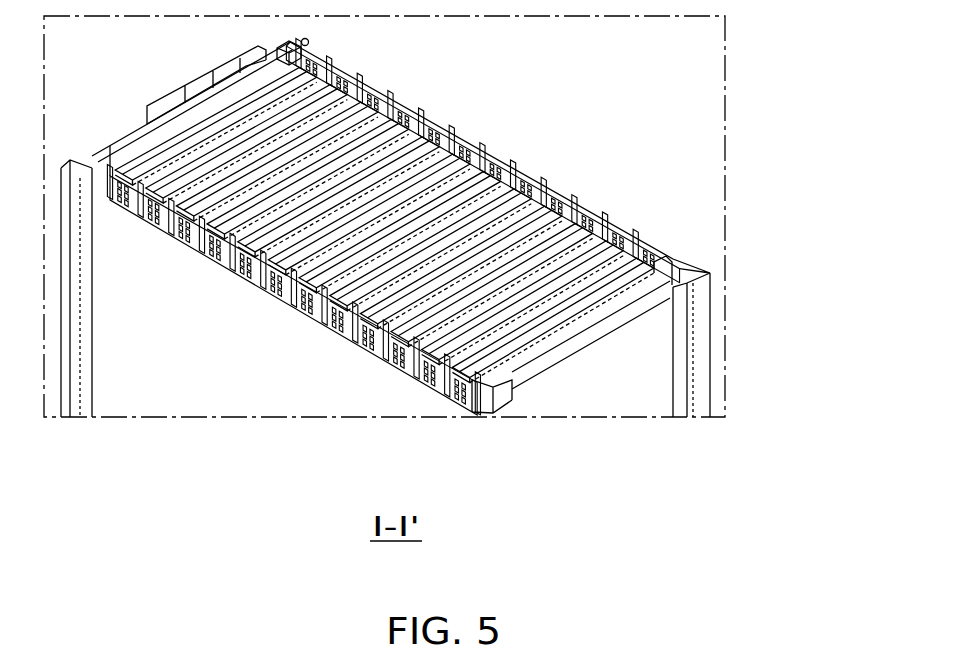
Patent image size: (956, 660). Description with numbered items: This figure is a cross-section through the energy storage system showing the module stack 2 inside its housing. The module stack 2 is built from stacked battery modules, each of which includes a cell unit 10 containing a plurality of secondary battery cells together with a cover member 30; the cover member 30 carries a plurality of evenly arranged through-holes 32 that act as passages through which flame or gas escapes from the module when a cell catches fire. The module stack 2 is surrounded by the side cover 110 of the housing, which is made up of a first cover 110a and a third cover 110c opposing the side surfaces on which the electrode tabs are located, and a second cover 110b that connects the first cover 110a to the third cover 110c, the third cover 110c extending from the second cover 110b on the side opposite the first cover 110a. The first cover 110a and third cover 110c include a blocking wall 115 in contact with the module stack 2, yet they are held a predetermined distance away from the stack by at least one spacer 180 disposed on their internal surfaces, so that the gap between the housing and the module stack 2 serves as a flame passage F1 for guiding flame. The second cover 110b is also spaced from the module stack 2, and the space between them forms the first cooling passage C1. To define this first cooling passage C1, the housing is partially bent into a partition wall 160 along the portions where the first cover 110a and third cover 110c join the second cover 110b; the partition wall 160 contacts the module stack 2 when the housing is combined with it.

The module stack 2 is at (558, 190).
The cell unit 10 is at (147, 123).
The cover member 30 is at (422, 130).
The through-hole 32 is at (440, 141).
The side cover 110 is at (569, 272).
The first cover 110a is at (667, 258).
The second cover 110b is at (653, 358).
The third cover 110c is at (430, 402).
The blocking wall 115 is at (77, 175).
The partition wall 160 is at (503, 393).
The spacer 180 is at (484, 148).
The first cooling passage C1 is at (615, 268).
The flame passage F1 is at (394, 100).